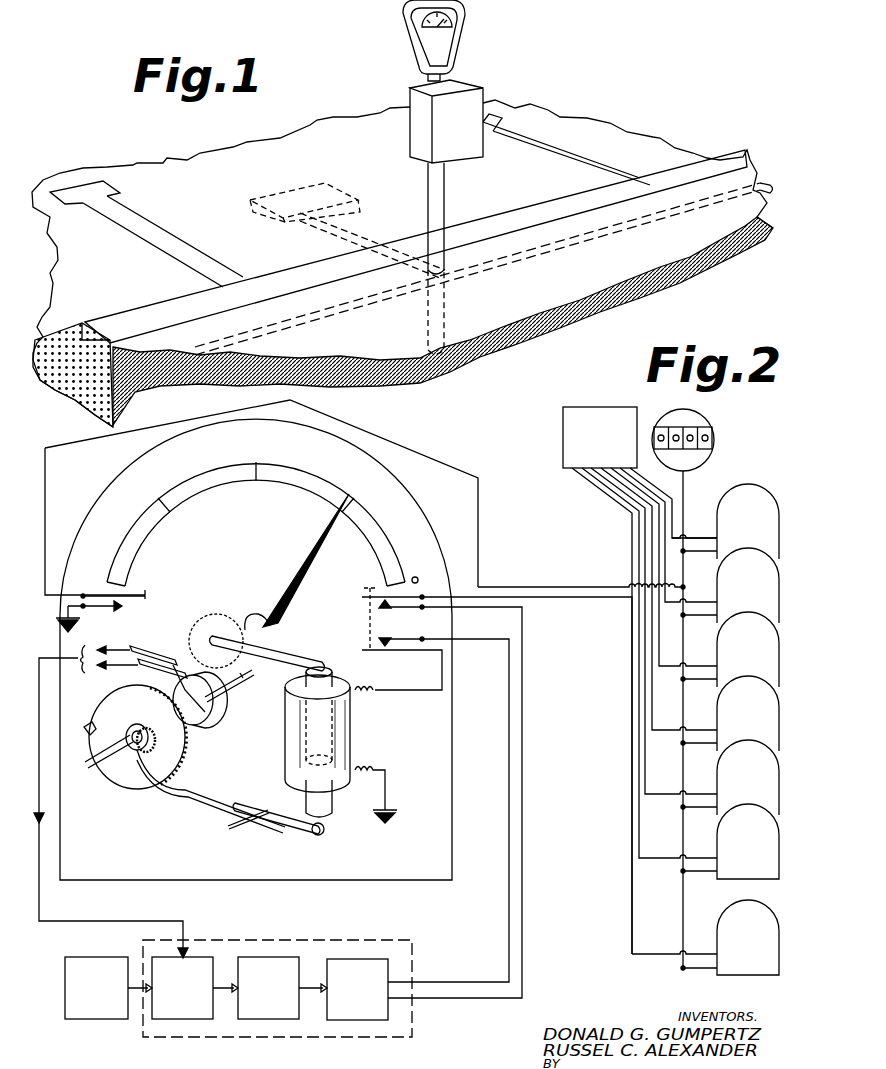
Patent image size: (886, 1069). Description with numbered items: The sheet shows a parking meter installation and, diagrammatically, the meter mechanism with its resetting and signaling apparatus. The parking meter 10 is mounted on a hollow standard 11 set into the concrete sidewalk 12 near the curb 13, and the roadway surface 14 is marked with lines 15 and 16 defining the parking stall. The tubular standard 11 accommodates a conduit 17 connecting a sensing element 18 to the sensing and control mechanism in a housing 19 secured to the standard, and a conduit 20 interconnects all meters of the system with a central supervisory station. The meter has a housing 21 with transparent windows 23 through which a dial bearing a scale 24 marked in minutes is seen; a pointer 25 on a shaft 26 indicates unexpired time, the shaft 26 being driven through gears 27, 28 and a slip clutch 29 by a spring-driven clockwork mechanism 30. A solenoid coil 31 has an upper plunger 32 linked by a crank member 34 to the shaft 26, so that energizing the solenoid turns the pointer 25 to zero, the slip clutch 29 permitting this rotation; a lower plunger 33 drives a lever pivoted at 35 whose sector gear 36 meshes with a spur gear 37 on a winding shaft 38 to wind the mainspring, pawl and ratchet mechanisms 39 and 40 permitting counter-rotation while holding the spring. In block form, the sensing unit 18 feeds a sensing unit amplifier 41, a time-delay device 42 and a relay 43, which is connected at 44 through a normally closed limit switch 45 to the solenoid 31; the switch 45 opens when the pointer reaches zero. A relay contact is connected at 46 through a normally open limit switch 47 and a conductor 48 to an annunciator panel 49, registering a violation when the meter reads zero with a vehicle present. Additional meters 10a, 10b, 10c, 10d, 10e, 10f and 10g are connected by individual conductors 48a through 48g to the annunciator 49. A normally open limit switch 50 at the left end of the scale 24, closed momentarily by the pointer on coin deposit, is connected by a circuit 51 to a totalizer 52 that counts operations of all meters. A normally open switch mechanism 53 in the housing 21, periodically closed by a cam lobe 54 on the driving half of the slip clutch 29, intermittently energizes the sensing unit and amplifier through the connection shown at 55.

In FIG. 1, the parking meter 10 is at (462, 36).
In FIG. 2, the parking meter 10 is at (398, 884).
In FIG. 2, the additional parking meter 10a is at (777, 540).
In FIG. 2, the additional parking meter 10b is at (777, 600).
In FIG. 2, the additional parking meter 10c is at (777, 658).
In FIG. 2, the additional parking meter 10d is at (777, 723).
In FIG. 2, the additional parking meter 10e is at (777, 788).
In FIG. 2, the additional parking meter 10f is at (777, 847).
In FIG. 2, the additional parking meter 10g is at (770, 923).
In FIG. 1, the standard 11 is at (445, 190).
In FIG. 1, the sidewalk 12 is at (565, 293).
In FIG. 1, the curb 13 is at (163, 315).
In FIG. 1, the roadway surface 14 is at (75, 255).
In FIG. 1, the line 15 is at (146, 230).
In FIG. 1, the line 16 is at (560, 117).
In FIG. 1, the conduit 17 is at (353, 234).
In FIG. 1, the sensing element 18 is at (335, 184).
In FIG. 2, the sensing element 18 is at (108, 1020).
In FIG. 1, the housing 19 is at (478, 105).
In FIG. 2, the housing 19 is at (255, 1038).
In FIG. 1, the conduit 20 is at (368, 329).
In FIG. 1, the housing 21 is at (430, 50).
In FIG. 1, the transparent window 23 is at (422, 24).
In FIG. 2, the scale 24 is at (223, 476).
In FIG. 2, the pointer 25 is at (305, 550).
In FIG. 2, the shaft 26 is at (244, 616).
In FIG. 2, the gear 27 is at (208, 622).
In FIG. 2, the gear 28 is at (244, 683).
In FIG. 2, the slip clutch 29 is at (205, 718).
In FIG. 2, the clockwork mechanism 30 is at (123, 789).
In FIG. 2, the solenoid coil 31 is at (352, 742).
In FIG. 2, the upper plunger 32 is at (330, 683).
In FIG. 2, the lower plunger 33 is at (333, 800).
In FIG. 2, the crank member 34 is at (281, 654).
In FIG. 2, the pivot 35 is at (255, 823).
In FIG. 2, the sector gear 36 is at (152, 772).
In FIG. 2, the spur gear 37 is at (122, 757).
In FIG. 2, the winding shaft 38 is at (84, 765).
In FIG. 2, the pawl and ratchet mechanism 39 is at (88, 724).
In FIG. 2, the pawl and ratchet mechanism 40 is at (134, 754).
In FIG. 2, the sensing unit amplifier 41 is at (186, 1020).
In FIG. 2, the time-delay device 42 is at (277, 1020).
In FIG. 2, the relay 43 is at (357, 1022).
In FIG. 2, the connection 44 is at (472, 981).
In FIG. 2, the normally closed limit switch 45 is at (388, 652).
In FIG. 2, the connection 46 is at (458, 1000).
In FIG. 2, the normally open limit switch 47 is at (413, 592).
In FIG. 2, the conductor 48 is at (597, 600).
In FIG. 2, the individual conductor 48a is at (698, 537).
In FIG. 2, the individual conductor 48g is at (655, 956).
In FIG. 2, the annunciator panel 49 is at (562, 447).
In FIG. 2, the normally open limit switch 50 is at (137, 603).
In FIG. 2, the operative circuit 51 is at (510, 587).
In FIG. 2, the totalizer 52 is at (714, 441).
In FIG. 2, the switch mechanism 53 is at (163, 656).
In FIG. 2, the cam lobe 54 is at (166, 688).
In FIG. 2, the connection 55 is at (90, 921).